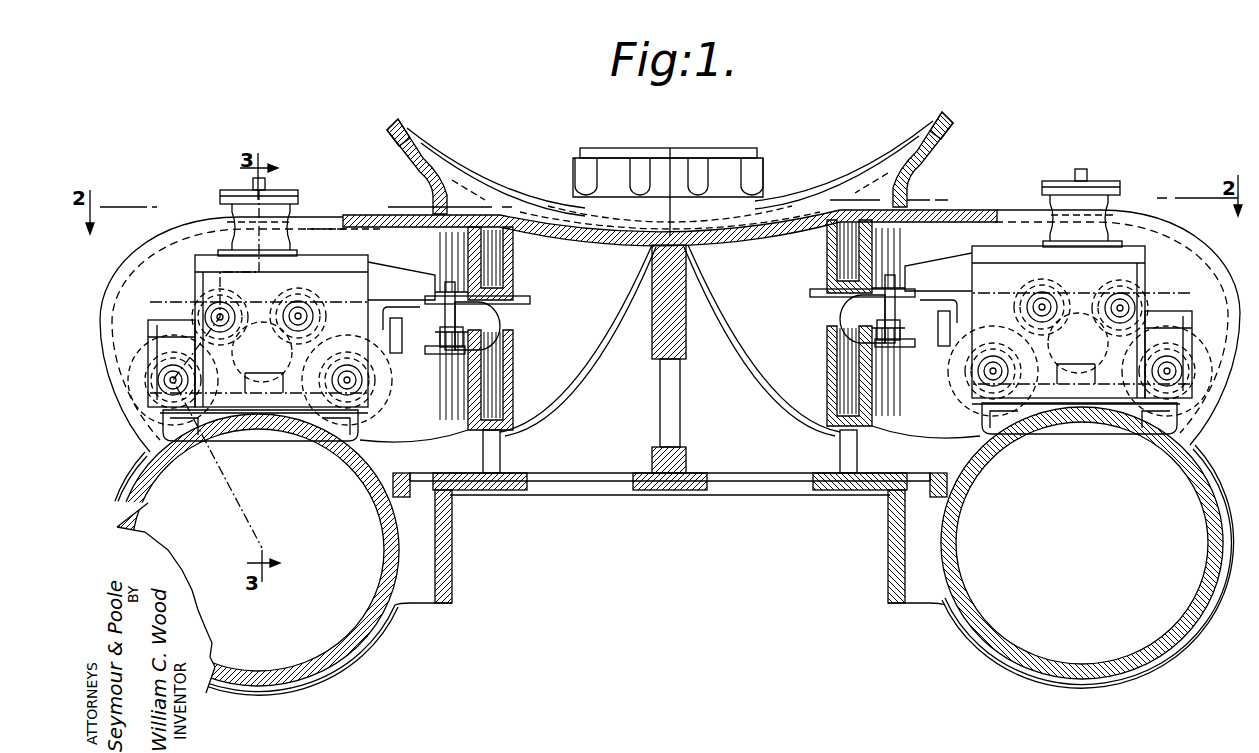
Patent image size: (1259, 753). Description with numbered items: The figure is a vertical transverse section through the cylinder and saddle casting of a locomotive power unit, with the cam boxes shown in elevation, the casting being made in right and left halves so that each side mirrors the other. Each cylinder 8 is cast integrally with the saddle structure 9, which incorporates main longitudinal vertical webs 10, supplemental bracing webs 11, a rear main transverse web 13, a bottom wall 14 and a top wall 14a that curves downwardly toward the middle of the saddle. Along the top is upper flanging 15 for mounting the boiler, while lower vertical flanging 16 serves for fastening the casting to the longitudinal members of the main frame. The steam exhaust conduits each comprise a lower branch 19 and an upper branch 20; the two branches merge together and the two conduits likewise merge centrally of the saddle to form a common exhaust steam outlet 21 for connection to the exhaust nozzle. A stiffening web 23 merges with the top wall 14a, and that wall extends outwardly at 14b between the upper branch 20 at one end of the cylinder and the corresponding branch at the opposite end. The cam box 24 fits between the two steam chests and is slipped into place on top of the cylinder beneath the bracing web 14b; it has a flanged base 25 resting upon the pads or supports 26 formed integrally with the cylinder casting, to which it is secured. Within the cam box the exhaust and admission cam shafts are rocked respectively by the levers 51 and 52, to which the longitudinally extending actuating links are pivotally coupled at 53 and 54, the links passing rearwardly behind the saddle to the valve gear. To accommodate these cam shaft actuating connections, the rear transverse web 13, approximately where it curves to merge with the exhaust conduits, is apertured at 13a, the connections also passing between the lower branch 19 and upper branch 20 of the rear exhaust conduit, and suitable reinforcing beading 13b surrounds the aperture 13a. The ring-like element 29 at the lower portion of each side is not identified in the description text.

The cylinder 8 is at (317, 690).
The saddle structure 9 is at (392, 125).
The main longitudinal vertical webs 10 is at (657, 352).
The supplemental bracing webs 11 is at (500, 455).
The main transverse web 13 is at (670, 344).
The aperture 13a is at (433, 356).
The reinforcing beading 13b is at (502, 318).
The bottom wall 14 is at (495, 493).
The top wall 14a is at (585, 240).
The outwardly extending wall portion 14b is at (383, 233).
The upper flanging 15 is at (478, 170).
The lower vertical flanging 16 is at (452, 565).
The lower branch 19 is at (427, 423).
The upper branch 20 is at (403, 243).
The common exhaust steam outlet 21 is at (650, 148).
The stiffening web 23 is at (427, 197).
The cam box 24 is at (670, 297).
The flanged base 25 is at (155, 402).
The pads or supports 26 is at (240, 430).
The ring 29 is at (387, 557).
The lever 51 is at (408, 357).
The lever 52 is at (530, 300).
The pivotal coupling 53 is at (445, 322).
The pivotal coupling 54 is at (659, 335).